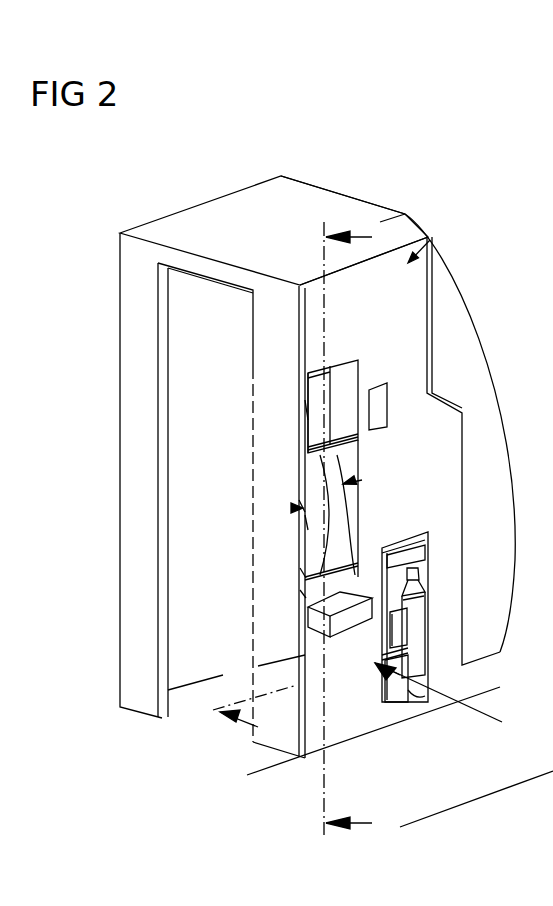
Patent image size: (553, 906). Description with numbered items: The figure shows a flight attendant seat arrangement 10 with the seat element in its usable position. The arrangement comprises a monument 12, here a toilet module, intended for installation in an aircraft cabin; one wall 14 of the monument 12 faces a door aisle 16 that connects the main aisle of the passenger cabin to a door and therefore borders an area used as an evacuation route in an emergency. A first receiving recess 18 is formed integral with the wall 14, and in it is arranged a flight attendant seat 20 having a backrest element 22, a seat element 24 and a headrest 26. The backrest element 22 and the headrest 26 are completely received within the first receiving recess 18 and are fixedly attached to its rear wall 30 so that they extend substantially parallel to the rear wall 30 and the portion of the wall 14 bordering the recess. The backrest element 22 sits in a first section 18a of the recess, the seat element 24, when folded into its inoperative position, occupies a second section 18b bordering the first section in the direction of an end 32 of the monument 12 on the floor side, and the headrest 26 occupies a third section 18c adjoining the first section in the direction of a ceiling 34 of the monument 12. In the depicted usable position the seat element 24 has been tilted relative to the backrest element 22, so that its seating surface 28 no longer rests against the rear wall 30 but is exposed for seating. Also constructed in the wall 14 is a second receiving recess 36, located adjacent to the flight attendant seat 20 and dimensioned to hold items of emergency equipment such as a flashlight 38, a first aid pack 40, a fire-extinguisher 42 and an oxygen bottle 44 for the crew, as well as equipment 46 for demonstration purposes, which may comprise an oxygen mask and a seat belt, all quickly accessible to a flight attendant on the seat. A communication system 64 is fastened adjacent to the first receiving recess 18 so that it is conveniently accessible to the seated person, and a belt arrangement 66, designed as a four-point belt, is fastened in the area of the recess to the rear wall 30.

The flight attendant seat arrangement 10 is at (170, 168).
The monument 12 is at (468, 310).
The wall 14 is at (430, 238).
The door aisle 16 is at (492, 780).
The first receiving recess 18 is at (355, 358).
The first section 18a is at (307, 519).
The second section 18b is at (300, 593).
The third section 18c is at (306, 413).
The flight attendant seat 20 is at (292, 508).
The backrest element 22 is at (302, 474).
The seat element 24 is at (298, 658).
The headrest 26 is at (308, 398).
The seating surface 28 is at (305, 622).
The rear wall 30 is at (300, 572).
The end 32 is at (357, 740).
The ceiling 34 is at (311, 203).
The second receiving recess 36 is at (417, 706).
The flashlight 38 is at (375, 666).
The first aid pack 40 is at (381, 698).
The fire-extinguisher 42 is at (413, 608).
The oxygen bottle 44 is at (415, 643).
The equipment for demonstration purposes 46 is at (401, 553).
The communication system 64 is at (372, 388).
The belt arrangement 66 is at (362, 480).